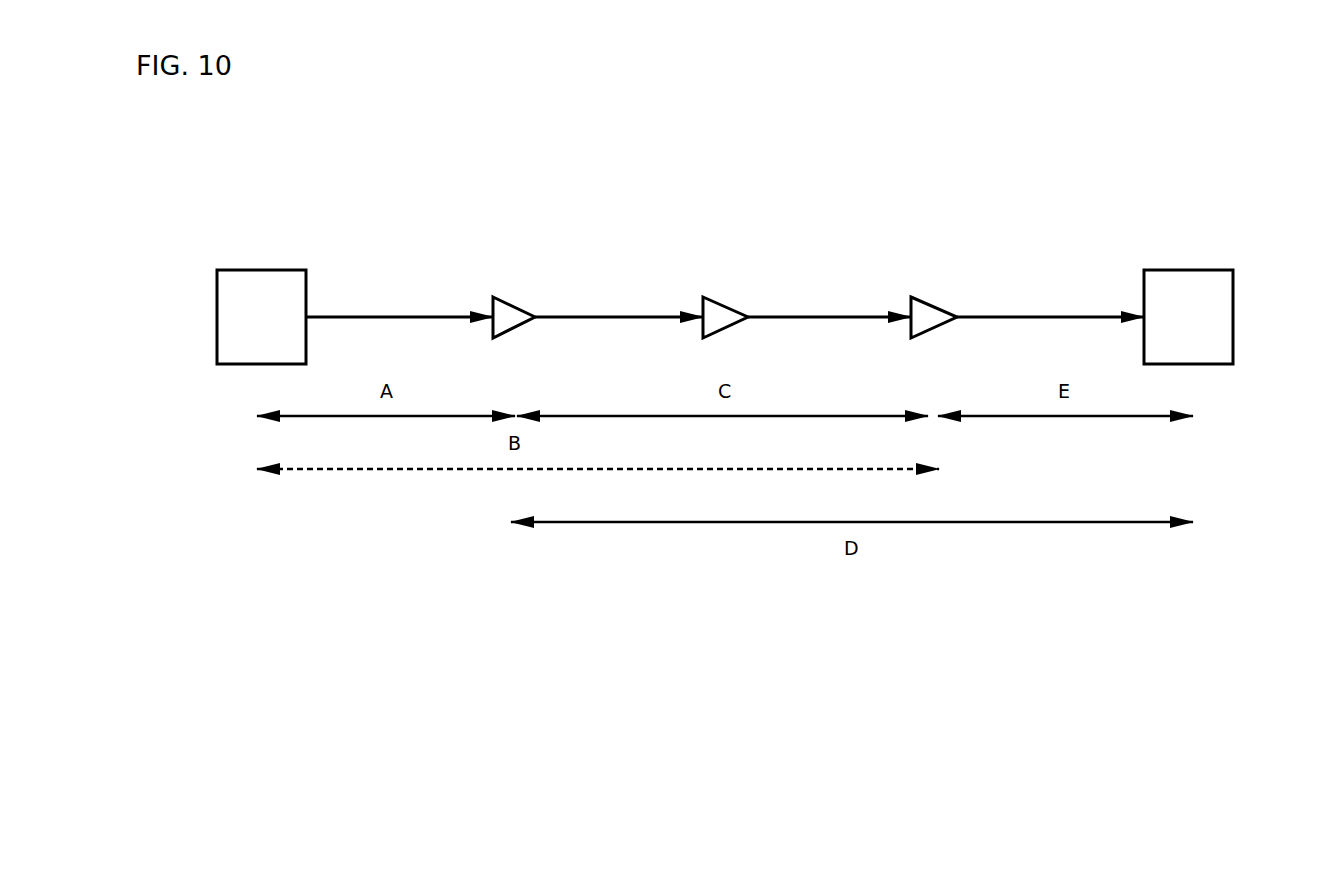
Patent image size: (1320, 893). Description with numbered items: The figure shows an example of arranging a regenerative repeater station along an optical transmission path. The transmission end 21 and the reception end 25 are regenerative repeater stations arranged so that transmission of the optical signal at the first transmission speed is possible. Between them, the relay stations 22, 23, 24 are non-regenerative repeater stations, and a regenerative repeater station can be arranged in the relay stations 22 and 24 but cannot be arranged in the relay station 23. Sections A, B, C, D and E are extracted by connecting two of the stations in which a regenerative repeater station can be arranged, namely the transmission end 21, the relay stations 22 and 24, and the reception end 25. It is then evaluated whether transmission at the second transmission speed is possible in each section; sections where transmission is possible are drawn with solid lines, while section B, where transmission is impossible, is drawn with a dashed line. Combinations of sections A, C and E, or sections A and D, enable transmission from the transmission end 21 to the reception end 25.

The transmission end 21 is at (280, 283).
The relay station 22 is at (523, 270).
The relay station 23 is at (732, 270).
The relay station 24 is at (941, 270).
The reception end 25 is at (1207, 283).